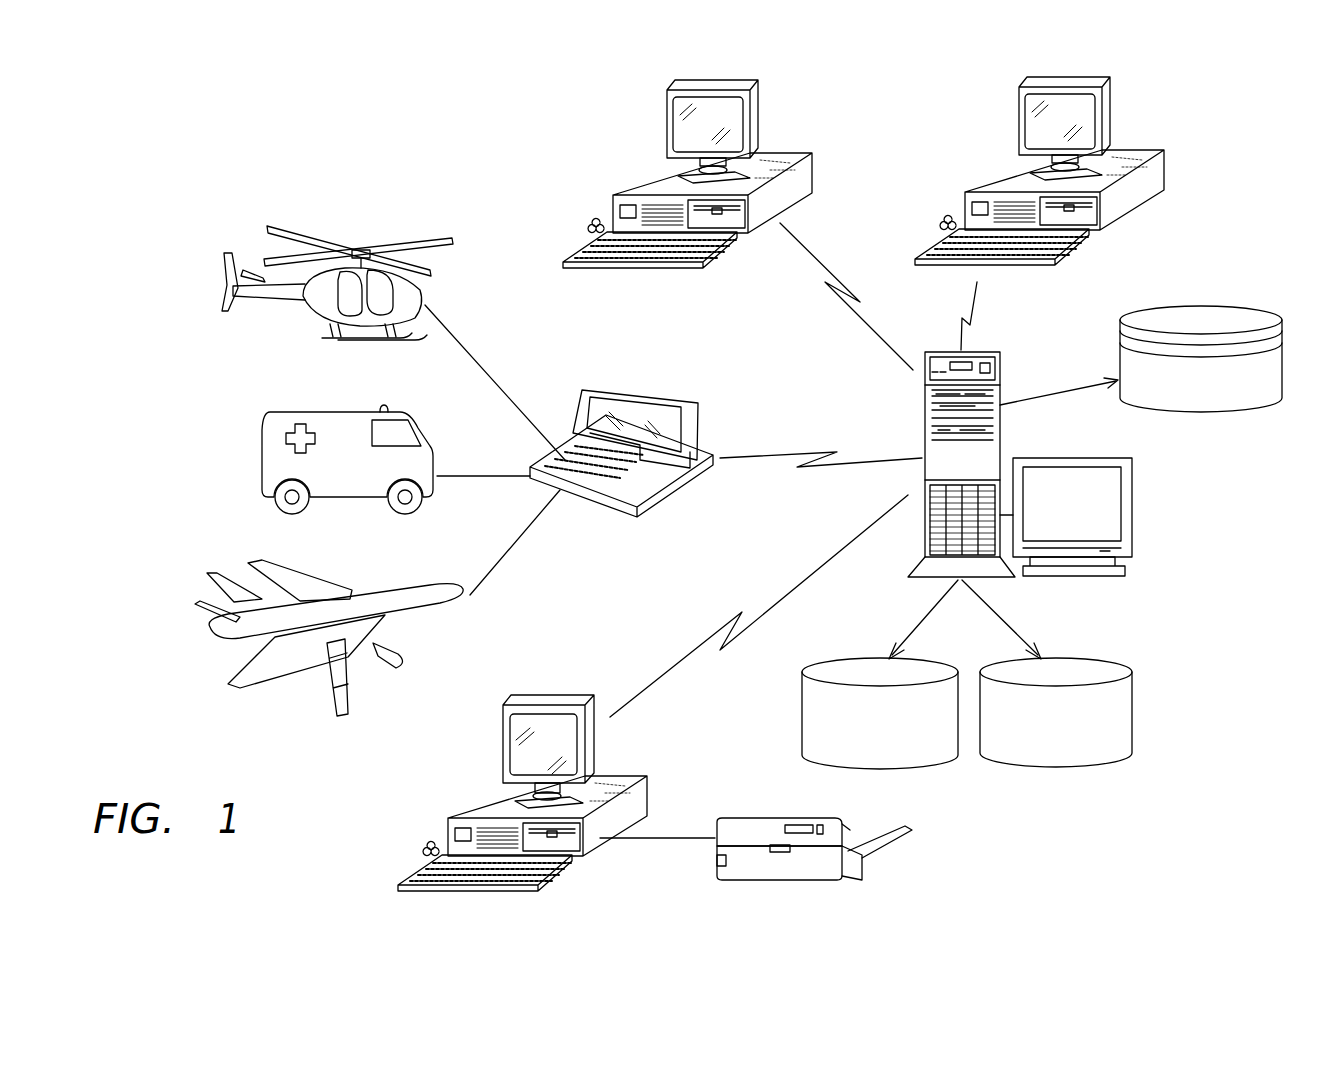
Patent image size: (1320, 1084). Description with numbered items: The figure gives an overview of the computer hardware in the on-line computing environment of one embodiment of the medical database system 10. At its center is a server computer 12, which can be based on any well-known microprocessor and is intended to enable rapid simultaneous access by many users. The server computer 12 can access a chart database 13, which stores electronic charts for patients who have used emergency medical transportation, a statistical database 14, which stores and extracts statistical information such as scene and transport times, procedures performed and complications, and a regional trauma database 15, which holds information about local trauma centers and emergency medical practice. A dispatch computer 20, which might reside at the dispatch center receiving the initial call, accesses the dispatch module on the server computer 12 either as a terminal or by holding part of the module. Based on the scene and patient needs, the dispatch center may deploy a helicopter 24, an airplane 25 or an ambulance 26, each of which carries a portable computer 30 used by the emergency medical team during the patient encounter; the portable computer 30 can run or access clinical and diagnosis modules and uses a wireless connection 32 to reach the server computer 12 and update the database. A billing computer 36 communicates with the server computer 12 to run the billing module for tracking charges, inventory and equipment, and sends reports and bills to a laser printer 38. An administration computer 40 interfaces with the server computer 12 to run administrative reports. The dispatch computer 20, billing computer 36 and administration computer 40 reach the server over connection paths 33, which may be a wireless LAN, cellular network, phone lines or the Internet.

The medical database system 10 is at (1233, 617).
The server computer 12 is at (1062, 456).
The chart database 13 is at (1210, 410).
The statistical database 14 is at (1083, 656).
The regional trauma database 15 is at (858, 656).
The dispatch computer 20 is at (777, 152).
The helicopter 24 is at (357, 250).
The airplane 25 is at (410, 588).
The ambulance 26 is at (340, 410).
The portable computer 30 is at (627, 393).
The wireless connection 32 is at (762, 455).
The connection paths 33 is at (810, 250).
The billing computer 36 is at (570, 705).
The laser printer 38 is at (810, 820).
The administration computer 40 is at (1006, 160).